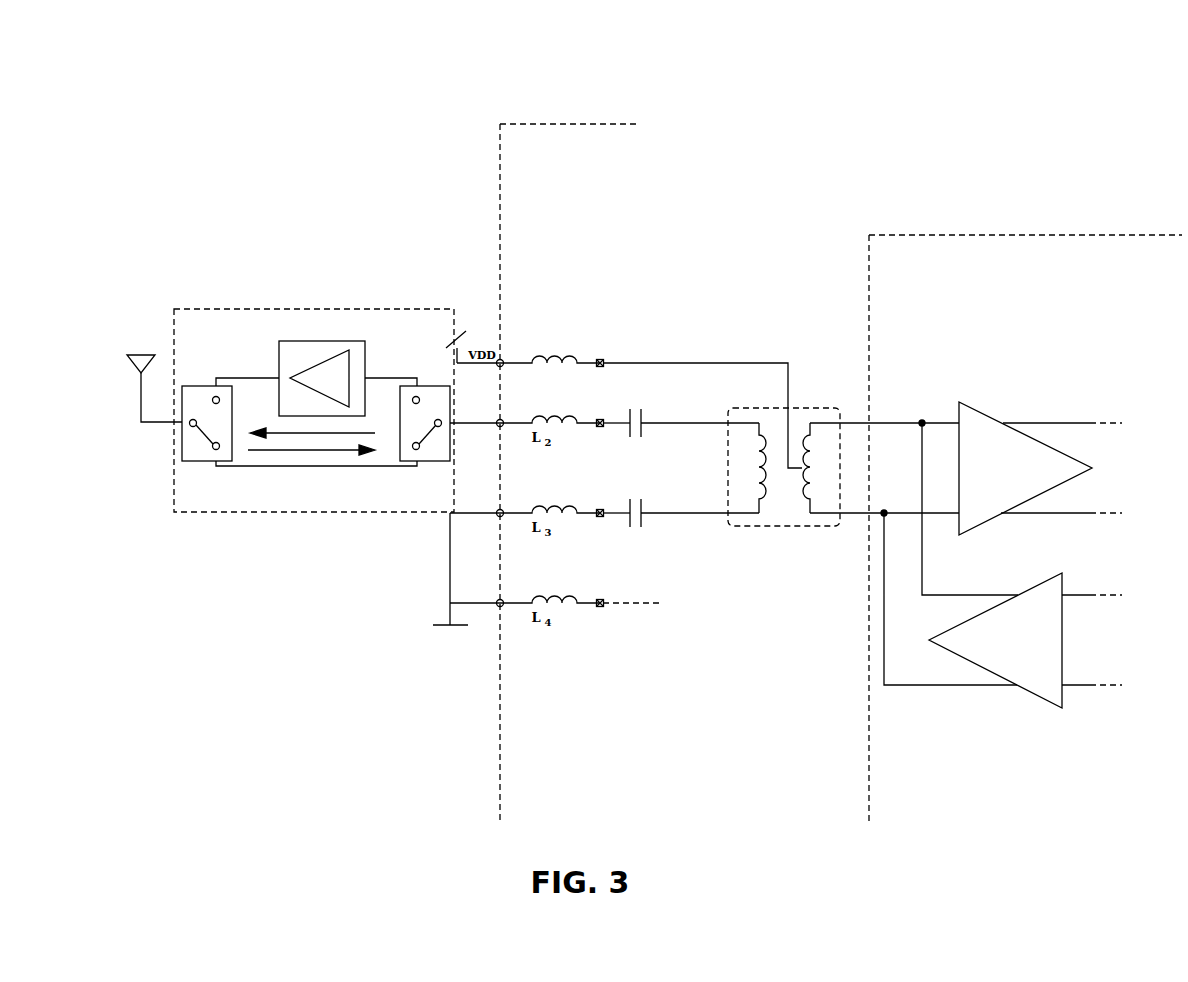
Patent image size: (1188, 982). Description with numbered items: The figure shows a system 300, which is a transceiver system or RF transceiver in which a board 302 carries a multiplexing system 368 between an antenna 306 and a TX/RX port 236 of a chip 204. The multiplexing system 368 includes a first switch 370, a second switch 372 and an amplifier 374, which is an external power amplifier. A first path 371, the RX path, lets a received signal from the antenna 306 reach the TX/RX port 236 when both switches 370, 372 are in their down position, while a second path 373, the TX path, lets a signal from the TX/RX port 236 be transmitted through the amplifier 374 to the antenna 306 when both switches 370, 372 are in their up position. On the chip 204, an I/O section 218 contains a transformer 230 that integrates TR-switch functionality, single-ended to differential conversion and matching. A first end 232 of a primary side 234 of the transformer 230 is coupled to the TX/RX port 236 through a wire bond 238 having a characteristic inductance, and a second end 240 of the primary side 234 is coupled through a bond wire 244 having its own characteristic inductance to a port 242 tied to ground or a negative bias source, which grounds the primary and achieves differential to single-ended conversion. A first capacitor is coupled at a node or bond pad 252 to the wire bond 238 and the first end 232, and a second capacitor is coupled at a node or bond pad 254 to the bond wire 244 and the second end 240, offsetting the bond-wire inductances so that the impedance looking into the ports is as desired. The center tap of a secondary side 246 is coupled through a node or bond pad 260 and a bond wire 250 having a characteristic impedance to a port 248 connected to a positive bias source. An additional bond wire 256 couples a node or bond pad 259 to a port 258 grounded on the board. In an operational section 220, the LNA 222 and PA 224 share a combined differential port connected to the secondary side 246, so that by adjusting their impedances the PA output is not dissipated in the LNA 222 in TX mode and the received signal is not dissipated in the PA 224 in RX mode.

The system 300 is at (948, 152).
The board 302 is at (320, 195).
The chip 204 is at (547, 124).
The I/O section 218 is at (636, 230).
The operational section 220 is at (937, 235).
The LNA 222 is at (1032, 423).
The PA 224 is at (1035, 700).
The transformer 230 is at (818, 528).
The first end 232 is at (709, 412).
The primary side 234 is at (760, 432).
The TX/RX port 236 is at (502, 426).
The wire bond 238 is at (600, 418).
The second end 240 is at (712, 532).
The port 242 is at (502, 516).
The bond wire 244 is at (600, 508).
The secondary side 246 is at (812, 432).
The port 248 is at (503, 360).
The bond wire 250 is at (585, 360).
The node or bond pad 252 is at (603, 427).
The node or bond pad 254 is at (603, 517).
The additional bond wire 256 is at (600, 598).
The port 258 is at (502, 606).
The node or bond pad 259 is at (603, 607).
The node or bond pad 260 is at (603, 358).
The antenna 306 is at (139, 353).
The multiplexing system 368 is at (295, 512).
The first switch 370 is at (216, 386).
The first path 371 is at (263, 452).
The second switch 372 is at (428, 386).
The second path 373 is at (265, 430).
The amplifier 374 is at (305, 341).